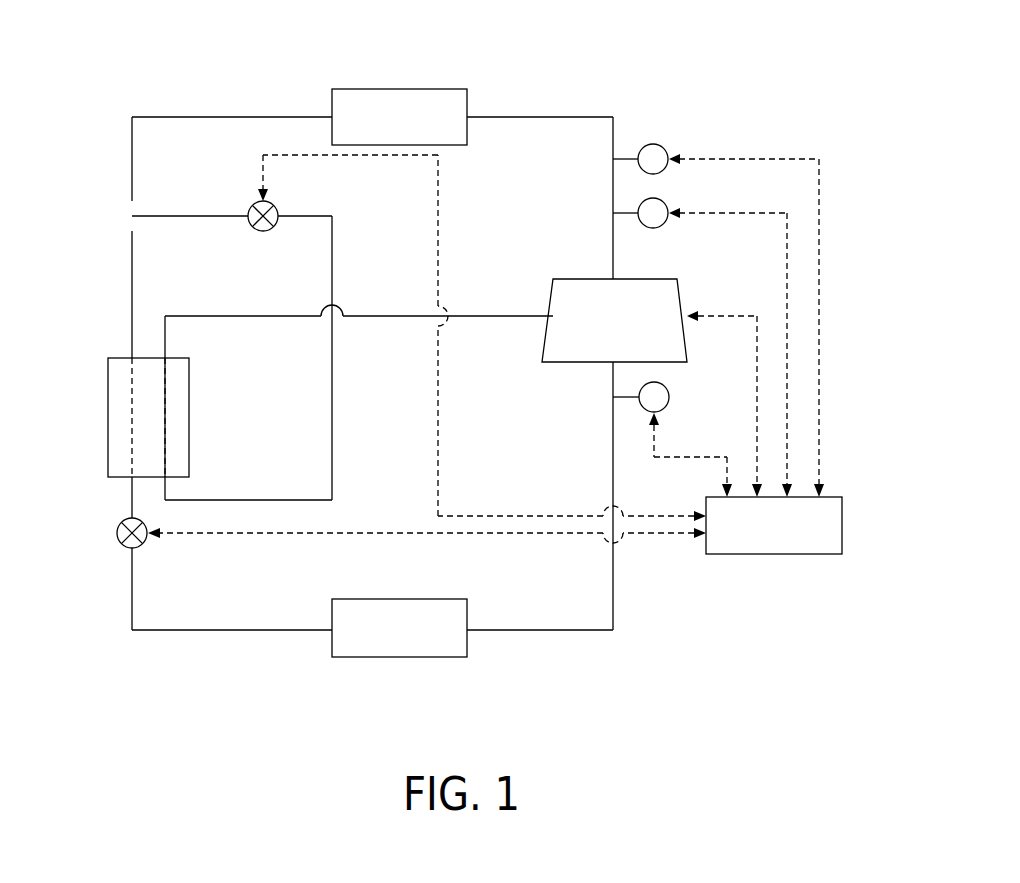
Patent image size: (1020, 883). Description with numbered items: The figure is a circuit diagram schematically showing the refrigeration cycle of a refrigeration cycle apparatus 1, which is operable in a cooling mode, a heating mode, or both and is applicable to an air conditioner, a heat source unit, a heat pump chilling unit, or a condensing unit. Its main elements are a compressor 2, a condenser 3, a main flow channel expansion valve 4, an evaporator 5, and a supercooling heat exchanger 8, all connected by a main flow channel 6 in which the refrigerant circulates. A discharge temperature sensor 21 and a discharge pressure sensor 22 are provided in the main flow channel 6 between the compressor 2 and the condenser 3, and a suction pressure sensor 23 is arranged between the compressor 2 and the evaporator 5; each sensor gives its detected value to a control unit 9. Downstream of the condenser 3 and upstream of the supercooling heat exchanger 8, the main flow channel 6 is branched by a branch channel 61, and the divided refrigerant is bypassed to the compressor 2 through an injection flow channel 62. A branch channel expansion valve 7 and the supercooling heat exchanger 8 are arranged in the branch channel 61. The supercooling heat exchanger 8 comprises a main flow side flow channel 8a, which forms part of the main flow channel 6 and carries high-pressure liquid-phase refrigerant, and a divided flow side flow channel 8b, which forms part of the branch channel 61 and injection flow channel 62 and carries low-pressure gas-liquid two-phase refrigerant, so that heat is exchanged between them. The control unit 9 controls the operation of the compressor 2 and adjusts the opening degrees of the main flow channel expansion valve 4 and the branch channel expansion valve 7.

The refrigeration cycle apparatus 1 is at (618, 80).
The compressor 2 is at (640, 279).
The condenser 3 is at (432, 87).
The main flow channel expansion valve 4 is at (116, 530).
The evaporator 5 is at (430, 599).
The main flow channel 6 is at (542, 117).
The branch channel 61 is at (318, 213).
The injection flow channel 62 is at (468, 316).
The branch channel expansion valve 7 is at (252, 202).
The supercooling heat exchanger 8 is at (190, 387).
The main flow side flow channel 8a is at (130, 442).
The divided flow side flow channel 8b is at (165, 442).
The control unit 9 is at (842, 525).
The discharge temperature sensor 21 is at (663, 142).
The discharge pressure sensor 22 is at (663, 197).
The suction pressure sensor 23 is at (665, 383).